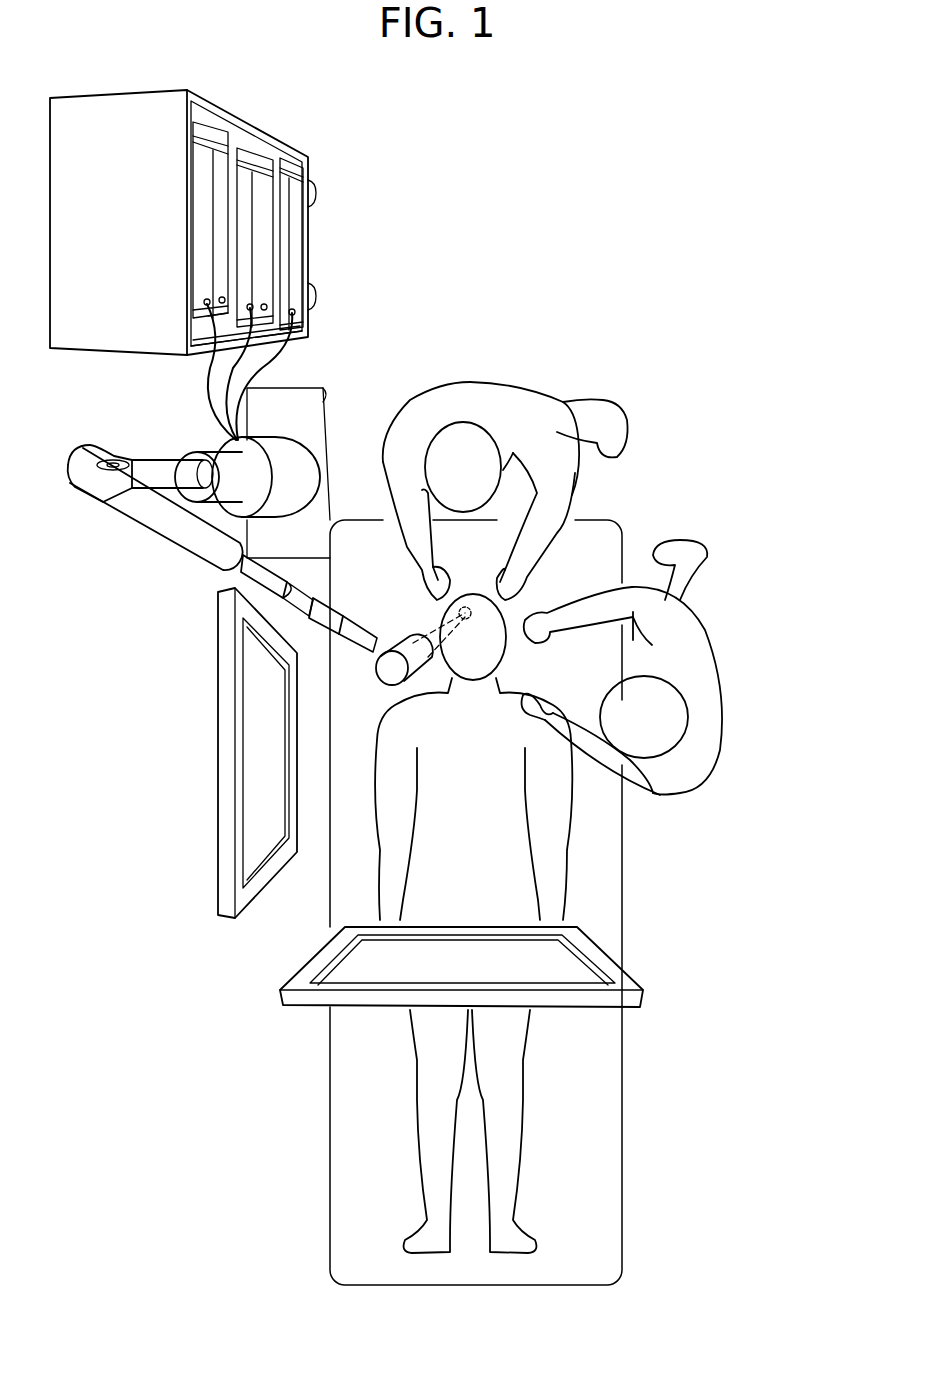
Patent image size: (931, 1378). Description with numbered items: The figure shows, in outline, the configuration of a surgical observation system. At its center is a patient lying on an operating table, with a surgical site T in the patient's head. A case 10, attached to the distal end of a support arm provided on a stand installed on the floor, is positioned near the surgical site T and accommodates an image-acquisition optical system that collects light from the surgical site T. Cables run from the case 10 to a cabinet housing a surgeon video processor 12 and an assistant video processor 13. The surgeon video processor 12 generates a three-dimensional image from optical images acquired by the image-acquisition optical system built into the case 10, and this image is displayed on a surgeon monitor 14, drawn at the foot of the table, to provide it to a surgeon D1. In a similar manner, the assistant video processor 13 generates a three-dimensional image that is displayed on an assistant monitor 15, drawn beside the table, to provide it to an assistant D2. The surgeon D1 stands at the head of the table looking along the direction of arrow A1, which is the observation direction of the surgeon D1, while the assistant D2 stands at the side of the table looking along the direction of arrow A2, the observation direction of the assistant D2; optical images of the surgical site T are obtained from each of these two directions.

The case 10 is at (405, 640).
The surgeon video processor 12 is at (208, 143).
The assistant video processor 13 is at (252, 150).
The surgeon monitor 14 is at (303, 981).
The assistant monitor 15 is at (225, 766).
The surgical site T is at (465, 607).
The surgeon D1 is at (466, 393).
The assistant D2 is at (718, 697).
The arrow A1 is at (704, 365).
The arrow A2 is at (829, 518).